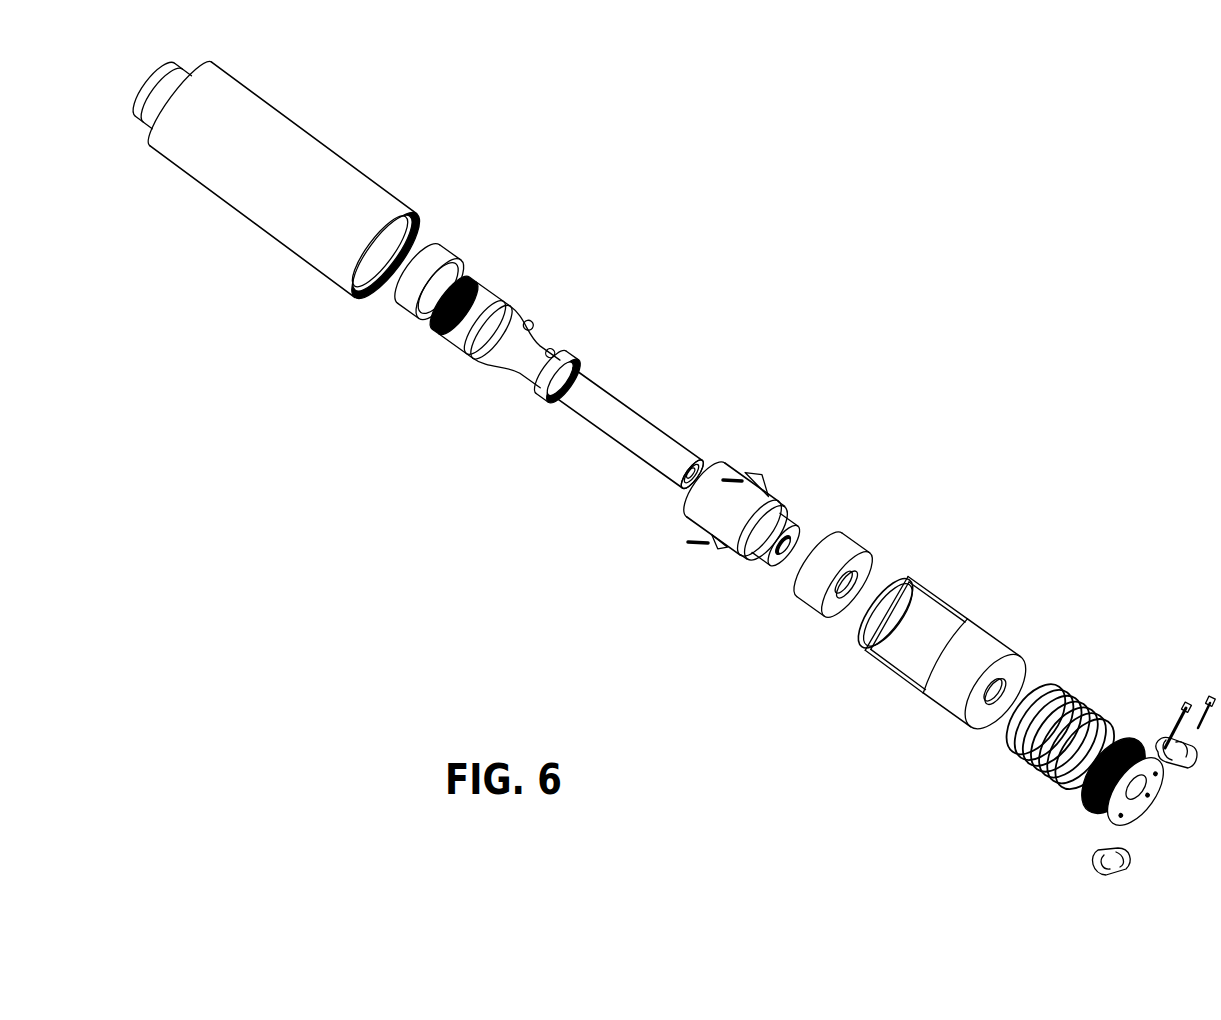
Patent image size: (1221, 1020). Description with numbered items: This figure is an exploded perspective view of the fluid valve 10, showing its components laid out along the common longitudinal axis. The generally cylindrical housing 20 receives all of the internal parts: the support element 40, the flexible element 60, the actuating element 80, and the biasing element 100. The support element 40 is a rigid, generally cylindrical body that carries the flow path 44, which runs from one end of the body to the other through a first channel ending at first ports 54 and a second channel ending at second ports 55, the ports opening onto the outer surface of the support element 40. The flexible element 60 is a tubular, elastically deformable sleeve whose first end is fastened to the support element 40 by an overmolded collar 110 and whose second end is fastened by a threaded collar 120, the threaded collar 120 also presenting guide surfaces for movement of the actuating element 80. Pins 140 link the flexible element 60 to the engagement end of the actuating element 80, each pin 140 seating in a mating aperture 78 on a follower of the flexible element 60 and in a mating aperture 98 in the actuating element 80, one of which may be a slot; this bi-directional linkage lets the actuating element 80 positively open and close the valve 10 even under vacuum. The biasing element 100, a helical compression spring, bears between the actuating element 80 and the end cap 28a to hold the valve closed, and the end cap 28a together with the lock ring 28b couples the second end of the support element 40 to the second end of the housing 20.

The fluid valve 10 is at (920, 288).
The housing 20 is at (298, 165).
The overmolded collar 110 is at (433, 258).
The first ports 54 is at (524, 320).
The second ports 55 is at (553, 350).
The support element 40 is at (603, 423).
The flow path 44 is at (690, 493).
The flexible element 60 is at (778, 492).
The mating aperture 78 is at (757, 472).
The pins 140 is at (736, 472).
The threaded collar 120 is at (837, 552).
The mating aperture 98 is at (895, 587).
The actuating element 80 is at (940, 697).
The biasing element 100 is at (1078, 694).
The end cap 28a is at (1092, 800).
The lock ring 28b is at (1130, 867).